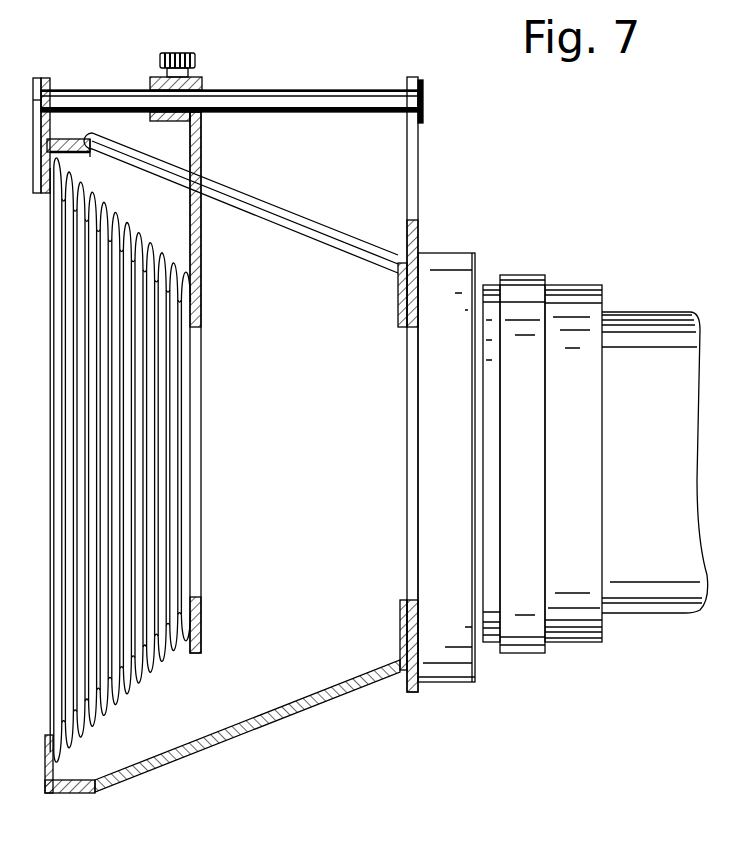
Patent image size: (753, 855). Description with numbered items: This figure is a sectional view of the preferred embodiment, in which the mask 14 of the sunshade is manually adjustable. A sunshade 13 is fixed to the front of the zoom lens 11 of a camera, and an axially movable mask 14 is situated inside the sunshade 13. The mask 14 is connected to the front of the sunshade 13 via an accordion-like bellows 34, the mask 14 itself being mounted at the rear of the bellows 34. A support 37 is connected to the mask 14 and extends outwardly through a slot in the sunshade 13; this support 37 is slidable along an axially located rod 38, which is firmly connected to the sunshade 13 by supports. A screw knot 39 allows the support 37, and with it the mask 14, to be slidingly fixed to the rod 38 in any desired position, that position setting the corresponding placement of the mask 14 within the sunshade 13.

The zoom lens 11 is at (580, 272).
The sunshade 13 is at (170, 755).
The mask 14 is at (203, 610).
The bellows 34 is at (78, 248).
The support 37 is at (199, 148).
The rod 38 is at (330, 93).
The screw knot 39 is at (158, 60).